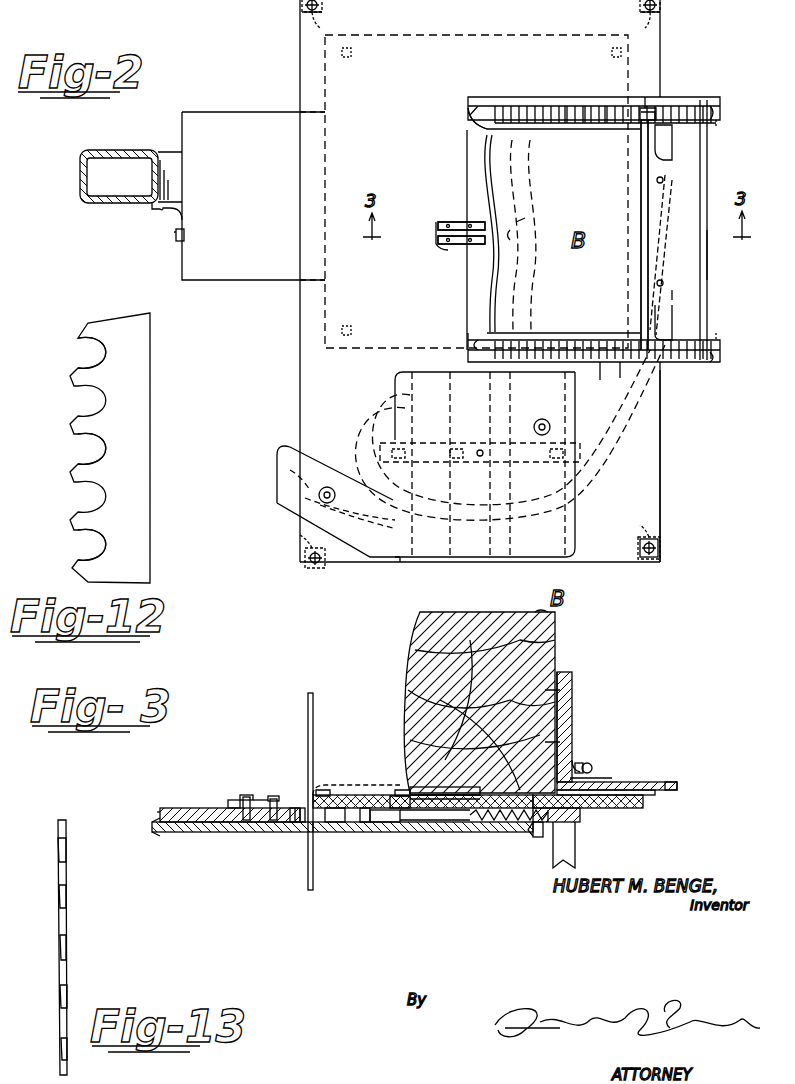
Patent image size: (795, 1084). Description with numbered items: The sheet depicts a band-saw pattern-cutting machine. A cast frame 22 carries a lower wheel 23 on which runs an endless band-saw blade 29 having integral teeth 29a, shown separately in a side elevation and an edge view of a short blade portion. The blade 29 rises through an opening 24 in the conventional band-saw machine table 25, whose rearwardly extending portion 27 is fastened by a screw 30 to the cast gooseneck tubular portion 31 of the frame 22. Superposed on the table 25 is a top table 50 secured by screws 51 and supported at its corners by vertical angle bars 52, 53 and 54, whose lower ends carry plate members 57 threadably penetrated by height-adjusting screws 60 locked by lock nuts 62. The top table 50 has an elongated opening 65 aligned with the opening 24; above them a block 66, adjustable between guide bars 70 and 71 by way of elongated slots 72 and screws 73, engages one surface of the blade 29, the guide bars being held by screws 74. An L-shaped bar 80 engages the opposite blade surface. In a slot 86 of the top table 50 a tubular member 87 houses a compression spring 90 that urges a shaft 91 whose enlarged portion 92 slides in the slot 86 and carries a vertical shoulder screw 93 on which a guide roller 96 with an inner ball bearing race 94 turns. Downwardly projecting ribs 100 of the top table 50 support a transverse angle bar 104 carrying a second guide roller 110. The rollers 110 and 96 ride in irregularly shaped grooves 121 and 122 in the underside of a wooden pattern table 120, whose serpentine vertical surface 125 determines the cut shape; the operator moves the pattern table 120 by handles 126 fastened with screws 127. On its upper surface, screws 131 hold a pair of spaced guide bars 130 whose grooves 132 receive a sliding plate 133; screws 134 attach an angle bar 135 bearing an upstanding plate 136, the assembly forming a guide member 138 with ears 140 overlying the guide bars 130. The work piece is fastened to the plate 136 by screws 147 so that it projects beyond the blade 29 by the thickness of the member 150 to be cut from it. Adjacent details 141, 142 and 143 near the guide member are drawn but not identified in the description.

In FIG. 2, the cast frame 22 is at (72, 173).
In FIG. 2, the lower wheel 23 is at (184, 232).
In FIG. 2, the opening 24 is at (470, 258).
In FIG. 3, the opening 24 is at (297, 825).
In FIG. 2, the band-saw machine table 25 is at (655, 57).
In FIG. 3, the band-saw machine table 25 is at (380, 822).
In FIG. 2, the rearwardly extending portion 27 is at (208, 283).
In FIG. 3, the rearwardly extending portion 27 is at (168, 833).
In FIG. 12, the band-saw blade 29 is at (145, 463).
In FIG. 3, the band-saw blade 29 is at (313, 712).
In FIG. 13, the band-saw blade 29 is at (74, 852).
In FIG. 12, the teeth 29a is at (88, 560).
In FIG. 13, the teeth 29a is at (60, 1046).
In FIG. 2, the screw 30 is at (161, 210).
In FIG. 2, the cast gooseneck tubular portion 31 is at (128, 140).
In FIG. 3, the top table 50 is at (191, 804).
In FIG. 2, the screws 51 is at (362, 331).
In FIG. 2, the angle bar 52 is at (658, 547).
In FIG. 2, the angle bar 53 is at (312, 568).
In FIG. 3, the angle bar 54 is at (575, 848).
In FIG. 2, the plate members 57 is at (461, 280).
In FIG. 2, the screw 60 is at (655, 575).
In FIG. 2, the lock nuts 62 is at (336, 565).
In FIG. 2, the elongated opening 65 is at (480, 562).
In FIG. 3, the elongated opening 65 is at (318, 833).
In FIG. 3, the block 66 is at (260, 800).
In FIG. 2, the guide bar 70 is at (440, 246).
In FIG. 2, the guide bar 71 is at (438, 225).
In FIG. 3, the guide bar 71 is at (228, 803).
In FIG. 3, the elongated slots 72 is at (277, 802).
In FIG. 2, the screws 73 is at (438, 236).
In FIG. 3, the screws 73 is at (272, 796).
In FIG. 2, the screws 74 is at (436, 244).
In FIG. 3, the L-shaped bar 80 is at (318, 779).
In FIG. 3, the slot 86 is at (382, 822).
In FIG. 3, the tubular member 87 is at (540, 822).
In FIG. 3, the compression spring 90 is at (515, 822).
In FIG. 3, the shaft 91 is at (425, 787).
In FIG. 3, the enlarged portion 92 is at (338, 822).
In FIG. 3, the shoulder screw 93 is at (398, 796).
In FIG. 2, the inner ball bearing race 94 is at (515, 236).
In FIG. 2, the guide roller 96 is at (522, 215).
In FIG. 2, the ribs 100 is at (505, 420).
In FIG. 2, the angle bar 104 is at (582, 462).
In FIG. 2, the guide roller 110 is at (480, 456).
In FIG. 2, the pattern table 120 is at (578, 512).
In FIG. 3, the pattern table 120 is at (610, 808).
In FIG. 2, the groove 121 is at (285, 488).
In FIG. 3, the groove 121 is at (535, 837).
In FIG. 2, the groove 122 is at (535, 268).
In FIG. 2, the irregularly shaped vertical surface 125 is at (476, 127).
In FIG. 3, the irregularly shaped vertical surface 125 is at (318, 793).
In FIG. 2, the handles 126 is at (350, 499).
In FIG. 2, the screws 127 is at (333, 482).
In FIG. 2, the guide bars 130 is at (718, 357).
In FIG. 3, the guide bars 130 is at (660, 775).
In FIG. 2, the screws 131 is at (512, 362).
In FIG. 2, the grooves 132 is at (720, 333).
In FIG. 3, the grooves 132 is at (677, 786).
In FIG. 2, the plate 133 is at (708, 258).
In FIG. 3, the plate 133 is at (650, 798).
In FIG. 2, the screws 134 is at (664, 283).
In FIG. 3, the screws 134 is at (612, 778).
In FIG. 2, the angle bar 135 is at (674, 294).
In FIG. 2, the plate 136 is at (645, 190).
In FIG. 3, the plate 136 is at (572, 690).
In FIG. 2, the guide member 138 is at (633, 211).
In FIG. 3, the guide member 138 is at (578, 708).
In FIG. 2, the ear 140 is at (641, 125).
In FIG. 2, the hook 141 is at (668, 338).
In FIG. 3, the hook 141 is at (593, 765).
In FIG. 2, the tab 142 is at (665, 362).
In FIG. 3, the tab 142 is at (578, 756).
In FIG. 2, the louver slat 143 is at (606, 362).
In FIG. 3, the screws 147 is at (560, 742).
In FIG. 2, the member 150 is at (488, 150).